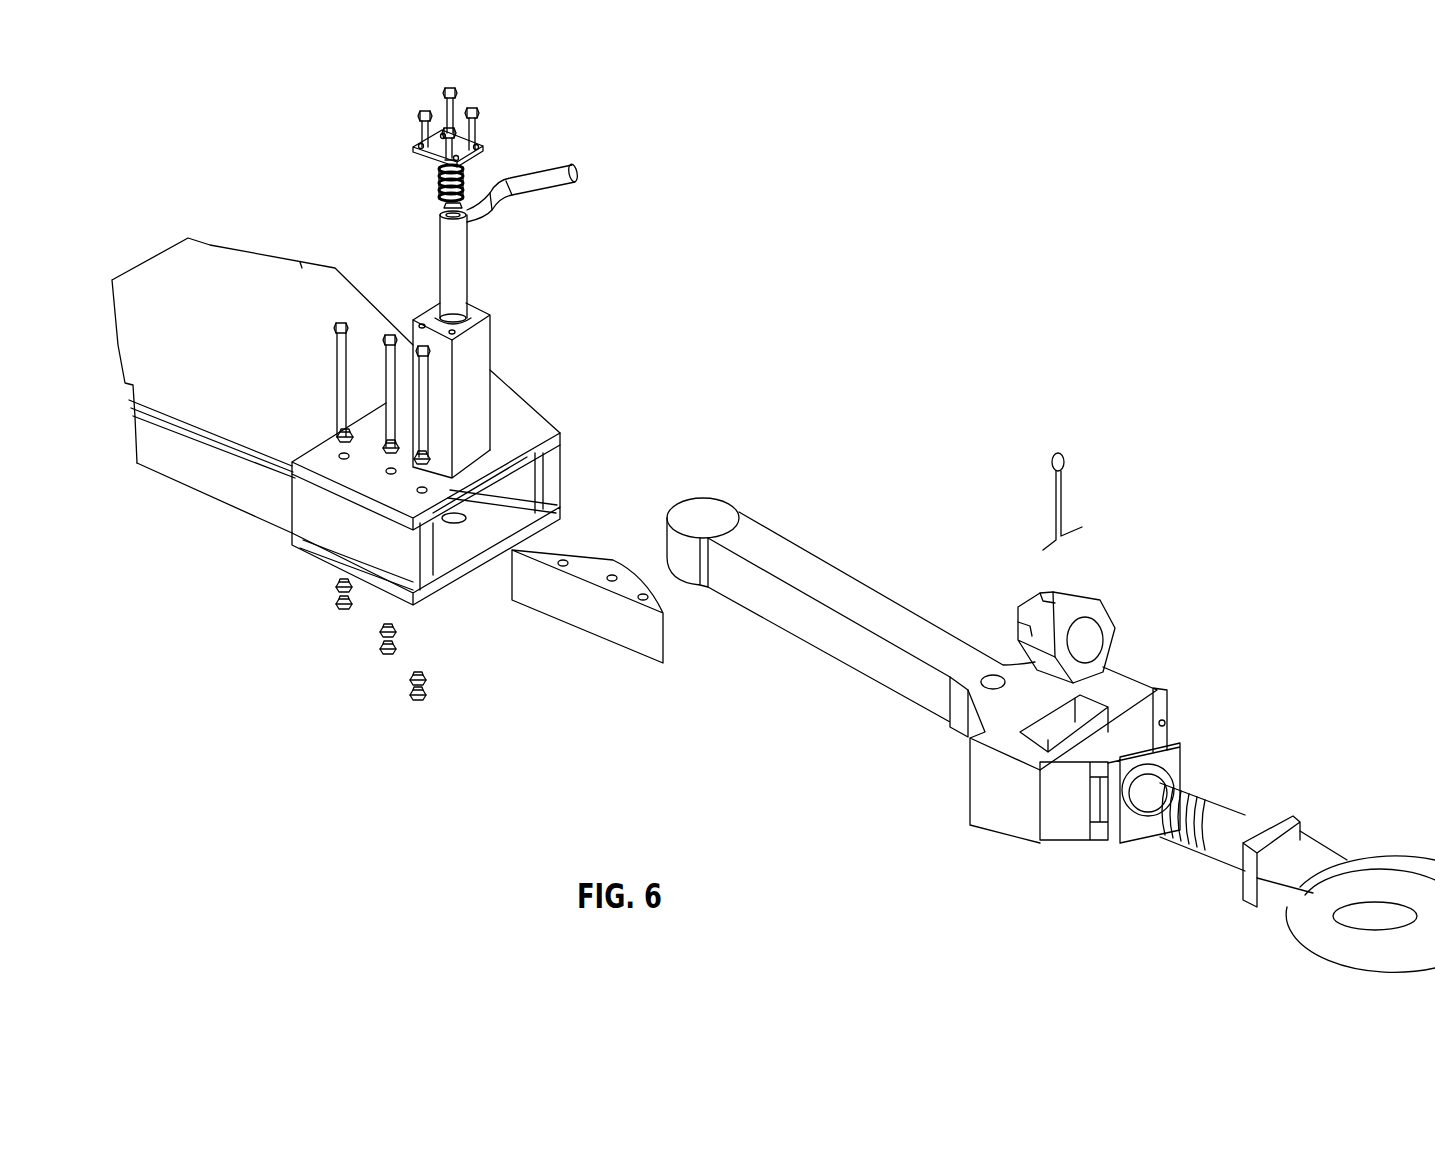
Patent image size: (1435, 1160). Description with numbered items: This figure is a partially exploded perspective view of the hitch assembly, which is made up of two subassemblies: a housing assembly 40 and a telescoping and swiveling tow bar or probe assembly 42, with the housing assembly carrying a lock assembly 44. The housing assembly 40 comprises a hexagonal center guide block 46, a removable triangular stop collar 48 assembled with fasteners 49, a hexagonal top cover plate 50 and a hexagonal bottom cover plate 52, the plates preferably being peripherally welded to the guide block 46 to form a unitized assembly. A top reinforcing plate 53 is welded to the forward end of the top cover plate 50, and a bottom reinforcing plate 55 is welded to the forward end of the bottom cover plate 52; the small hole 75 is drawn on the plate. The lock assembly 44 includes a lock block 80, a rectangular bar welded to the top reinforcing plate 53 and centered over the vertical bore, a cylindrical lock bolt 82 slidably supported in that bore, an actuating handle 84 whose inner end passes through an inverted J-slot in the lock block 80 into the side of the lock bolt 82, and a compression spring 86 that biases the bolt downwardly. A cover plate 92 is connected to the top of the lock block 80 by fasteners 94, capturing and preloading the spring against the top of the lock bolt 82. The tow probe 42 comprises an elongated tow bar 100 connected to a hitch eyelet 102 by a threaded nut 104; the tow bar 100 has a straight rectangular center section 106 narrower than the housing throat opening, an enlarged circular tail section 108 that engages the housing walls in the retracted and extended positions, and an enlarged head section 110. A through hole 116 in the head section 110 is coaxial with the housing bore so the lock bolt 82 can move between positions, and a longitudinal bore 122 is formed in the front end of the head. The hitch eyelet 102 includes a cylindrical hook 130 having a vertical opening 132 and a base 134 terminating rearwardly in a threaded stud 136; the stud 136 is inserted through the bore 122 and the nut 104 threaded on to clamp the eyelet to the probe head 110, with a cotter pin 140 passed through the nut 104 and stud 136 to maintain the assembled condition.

The housing assembly 40 is at (299, 251).
The probe assembly 42 is at (825, 546).
The lock assembly 44 is at (497, 346).
The center guide block 46 is at (237, 478).
The stop collar 48 is at (547, 603).
The fasteners 49 is at (342, 368).
The top cover plate 50 is at (177, 262).
The bottom cover plate 52 is at (200, 492).
The top reinforcing plate 53 is at (520, 423).
The bottom reinforcing plate 55 is at (560, 503).
The hole 75 is at (338, 458).
The lock block 80 is at (490, 370).
The lock bolt 82 is at (468, 280).
The actuating handle 84 is at (577, 170).
The compression spring 86 is at (467, 190).
The cover plate 92 is at (415, 148).
The fasteners 94 is at (414, 115).
The tow bar 100 is at (782, 644).
The hitch eyelet 102 is at (1325, 843).
The threaded nut 104 is at (1083, 602).
The center section 106 is at (898, 683).
The tail section 108 is at (697, 505).
The head section 110 is at (992, 783).
The through hole 116 is at (993, 667).
The longitudinal bore 122 is at (1152, 773).
The cylindrical hook 130 is at (1290, 930).
The vertical opening 132 is at (1387, 908).
The base 134 is at (1273, 902).
The threaded stud 136 is at (1223, 853).
The cotter pin 140 is at (1067, 492).